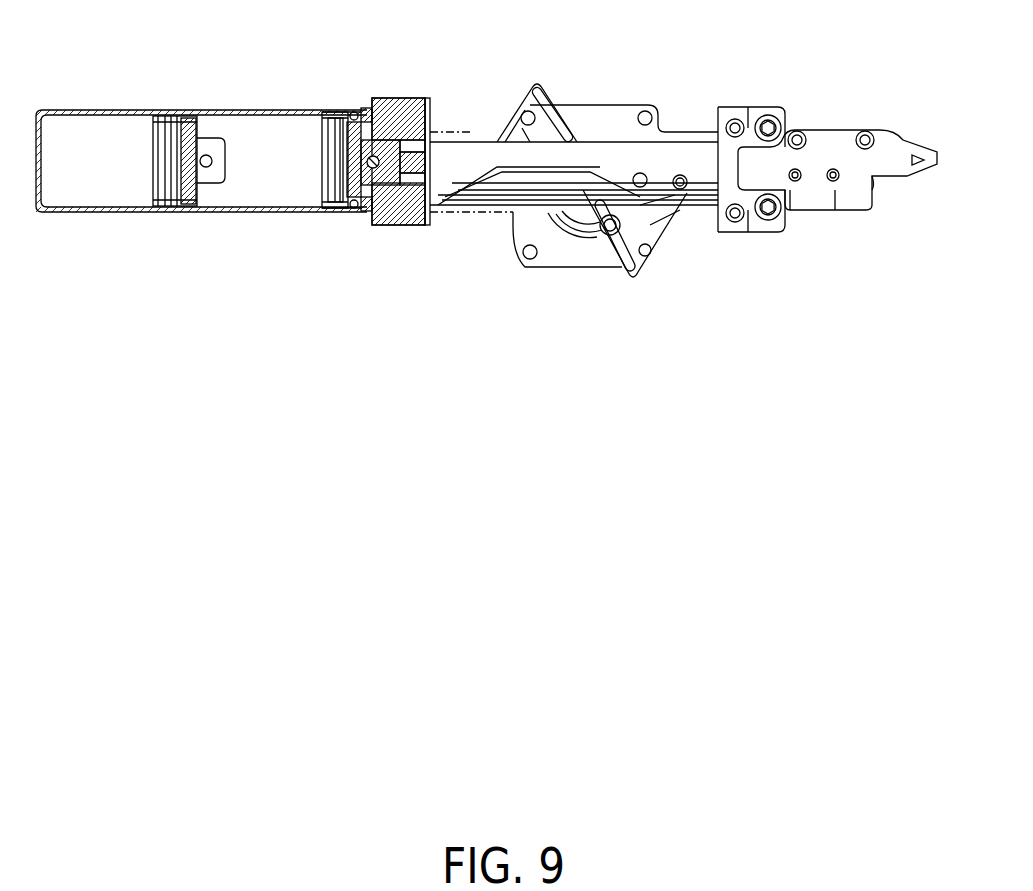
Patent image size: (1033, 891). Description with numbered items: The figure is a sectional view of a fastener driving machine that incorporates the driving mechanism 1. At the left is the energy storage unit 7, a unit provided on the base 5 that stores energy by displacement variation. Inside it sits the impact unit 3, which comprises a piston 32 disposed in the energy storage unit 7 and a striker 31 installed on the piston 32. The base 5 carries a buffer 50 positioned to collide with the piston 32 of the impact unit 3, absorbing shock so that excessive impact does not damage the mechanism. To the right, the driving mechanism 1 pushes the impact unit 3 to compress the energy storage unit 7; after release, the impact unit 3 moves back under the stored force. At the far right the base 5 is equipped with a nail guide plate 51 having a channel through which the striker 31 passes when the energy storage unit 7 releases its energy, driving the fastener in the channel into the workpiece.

The driving mechanism 1 is at (543, 82).
The impact unit 3 is at (293, 276).
The striker 31 is at (367, 203).
The piston 32 is at (327, 167).
The base 5 is at (398, 98).
The buffer 50 is at (370, 108).
The nail guide plate 51 is at (840, 140).
The energy storage unit 7 is at (258, 110).